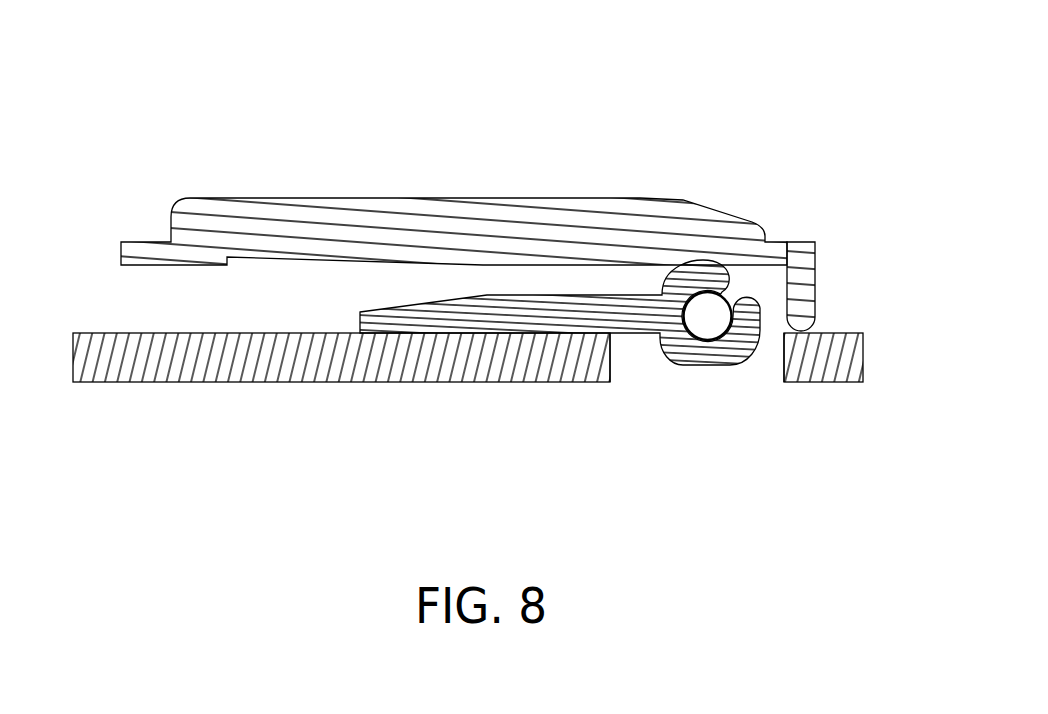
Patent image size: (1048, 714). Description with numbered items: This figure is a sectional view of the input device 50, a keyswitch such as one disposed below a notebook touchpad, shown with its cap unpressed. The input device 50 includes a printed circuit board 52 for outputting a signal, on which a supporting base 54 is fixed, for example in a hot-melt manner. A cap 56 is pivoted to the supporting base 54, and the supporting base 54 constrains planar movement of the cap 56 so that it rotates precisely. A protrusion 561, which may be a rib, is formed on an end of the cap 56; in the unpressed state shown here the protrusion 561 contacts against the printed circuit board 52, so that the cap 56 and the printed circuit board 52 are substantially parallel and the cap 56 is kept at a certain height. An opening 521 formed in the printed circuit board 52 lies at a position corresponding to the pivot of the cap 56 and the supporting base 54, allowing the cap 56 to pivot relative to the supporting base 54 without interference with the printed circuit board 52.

The input device 50 is at (934, 102).
The printed circuit board 52 is at (546, 392).
The opening 521 is at (646, 372).
The supporting base 54 is at (389, 318).
The cap 56 is at (526, 248).
The protrusion 561 is at (808, 292).